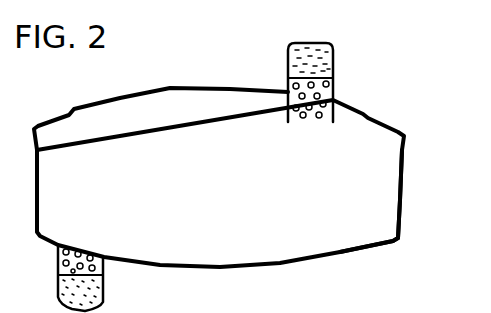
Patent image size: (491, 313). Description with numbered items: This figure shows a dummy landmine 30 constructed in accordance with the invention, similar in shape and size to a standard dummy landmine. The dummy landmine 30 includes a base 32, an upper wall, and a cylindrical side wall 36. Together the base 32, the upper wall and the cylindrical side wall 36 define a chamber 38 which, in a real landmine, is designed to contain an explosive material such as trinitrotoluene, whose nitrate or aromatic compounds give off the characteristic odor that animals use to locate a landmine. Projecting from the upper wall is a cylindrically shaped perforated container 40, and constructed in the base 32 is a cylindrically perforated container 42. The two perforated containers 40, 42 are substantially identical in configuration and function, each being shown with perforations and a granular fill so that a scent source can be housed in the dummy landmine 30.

The dummy landmine 30 is at (389, 78).
The base 32 is at (342, 254).
The cylindrical side wall 36 is at (402, 198).
The chamber 38 is at (362, 225).
The cylindrically shaped perforated container 40 is at (288, 61).
The cylindrically perforated container 42 is at (108, 296).